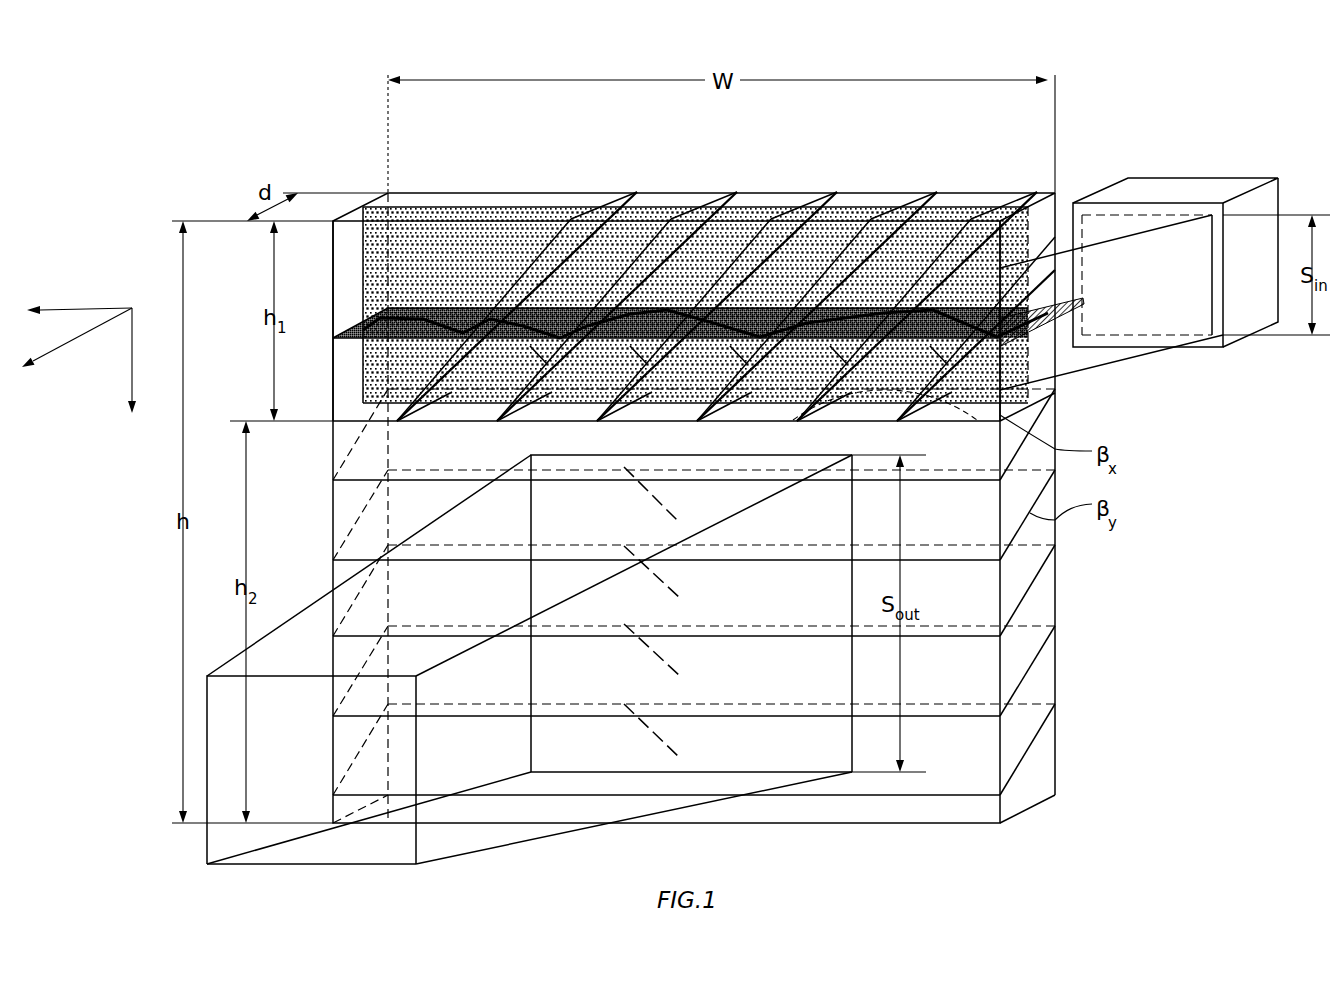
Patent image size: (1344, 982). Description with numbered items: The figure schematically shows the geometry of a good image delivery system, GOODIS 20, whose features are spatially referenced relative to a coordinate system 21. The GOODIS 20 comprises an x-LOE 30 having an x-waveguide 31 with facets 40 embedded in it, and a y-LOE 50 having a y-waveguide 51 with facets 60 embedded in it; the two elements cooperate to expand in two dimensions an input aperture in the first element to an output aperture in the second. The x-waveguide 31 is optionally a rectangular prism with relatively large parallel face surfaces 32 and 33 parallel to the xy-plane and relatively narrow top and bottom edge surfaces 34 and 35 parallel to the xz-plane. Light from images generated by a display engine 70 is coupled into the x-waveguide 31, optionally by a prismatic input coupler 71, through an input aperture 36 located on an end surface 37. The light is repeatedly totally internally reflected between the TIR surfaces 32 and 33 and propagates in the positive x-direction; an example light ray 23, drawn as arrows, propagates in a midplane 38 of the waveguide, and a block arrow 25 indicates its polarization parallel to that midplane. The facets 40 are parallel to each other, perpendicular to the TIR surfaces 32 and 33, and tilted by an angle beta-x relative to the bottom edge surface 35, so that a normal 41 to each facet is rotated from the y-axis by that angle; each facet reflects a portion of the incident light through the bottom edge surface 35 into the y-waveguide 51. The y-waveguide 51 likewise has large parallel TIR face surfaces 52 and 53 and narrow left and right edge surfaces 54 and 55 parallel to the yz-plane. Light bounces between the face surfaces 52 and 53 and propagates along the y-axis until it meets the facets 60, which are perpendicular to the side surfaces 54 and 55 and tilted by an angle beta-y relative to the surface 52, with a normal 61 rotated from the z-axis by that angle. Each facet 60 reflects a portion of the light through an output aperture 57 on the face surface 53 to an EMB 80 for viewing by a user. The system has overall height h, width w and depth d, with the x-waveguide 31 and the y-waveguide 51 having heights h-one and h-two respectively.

The GOODIS 20 is at (185, 87).
The coordinate system 21 is at (107, 277).
The light ray 23 is at (860, 323).
The block arrow 25 is at (1040, 325).
The x-LOE 30 is at (645, 137).
The x-waveguide 31 is at (568, 187).
The face surface 32 is at (893, 193).
The face surface 33 is at (840, 233).
The top edge surface 34 is at (333, 233).
The bottom edge surface 35 is at (357, 417).
The input aperture 36 is at (1043, 287).
The end surface 37 is at (1050, 210).
The midplane 38 is at (360, 320).
The facets 40 is at (615, 217).
The normal 41 is at (532, 346).
The y-LOE 50 is at (1160, 579).
The y-waveguide 51 is at (1047, 606).
The TIR face surface 52 is at (1055, 719).
The TIR face surface 53 is at (991, 755).
The left edge surface 54 is at (333, 576).
The right edge surface 55 is at (1040, 787).
The output aperture 57 is at (852, 751).
The facets 60 is at (1029, 669).
The normal 61 is at (676, 585).
The display engine 70 is at (1272, 274).
The prismatic input coupler 71 is at (1117, 227).
The EMB 80 is at (393, 855).